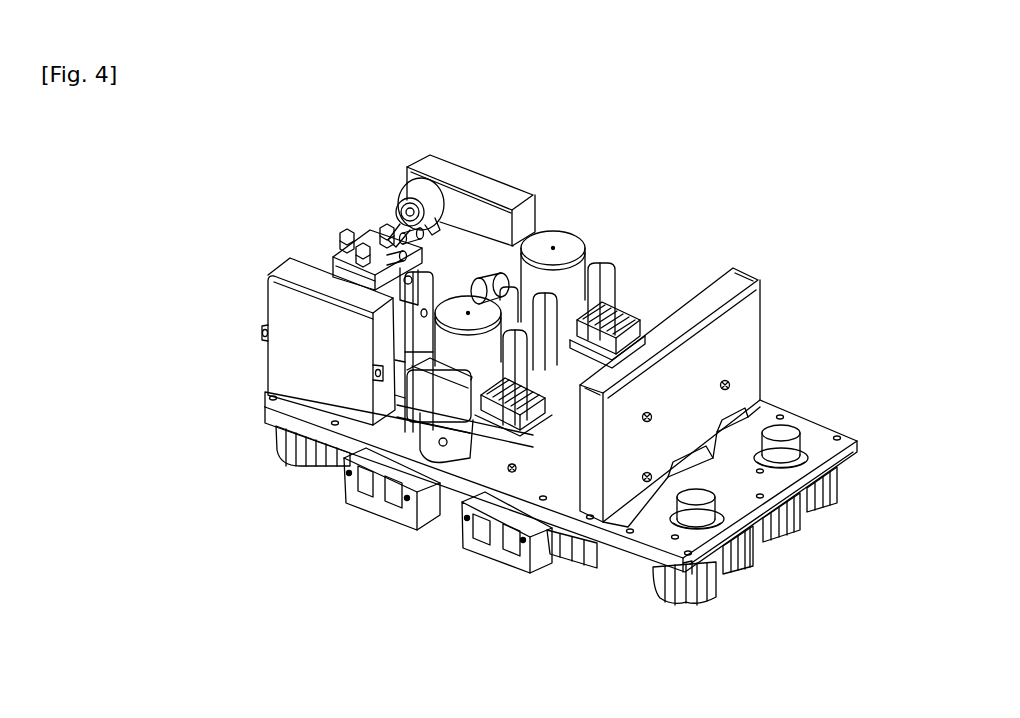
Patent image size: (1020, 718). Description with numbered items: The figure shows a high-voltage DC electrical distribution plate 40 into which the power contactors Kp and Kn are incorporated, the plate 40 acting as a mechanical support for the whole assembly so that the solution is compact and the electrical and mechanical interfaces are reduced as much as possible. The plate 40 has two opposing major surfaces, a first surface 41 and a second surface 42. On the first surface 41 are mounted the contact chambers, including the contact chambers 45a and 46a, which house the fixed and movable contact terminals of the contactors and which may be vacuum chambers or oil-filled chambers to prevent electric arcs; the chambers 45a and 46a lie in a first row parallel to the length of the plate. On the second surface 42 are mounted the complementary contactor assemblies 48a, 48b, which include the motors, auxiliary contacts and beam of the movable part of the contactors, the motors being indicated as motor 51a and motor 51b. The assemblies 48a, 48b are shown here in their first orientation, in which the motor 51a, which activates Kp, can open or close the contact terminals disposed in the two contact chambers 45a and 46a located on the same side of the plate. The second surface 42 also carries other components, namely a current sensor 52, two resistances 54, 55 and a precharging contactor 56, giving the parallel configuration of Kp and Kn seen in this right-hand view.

The plate 40 is at (773, 200).
The first surface 41 is at (810, 520).
The second surface 42 is at (818, 403).
The contact chamber 45a is at (517, 565).
The contact chamber 46a is at (377, 516).
The complementary contactor assembly 48a is at (440, 398).
The complementary contactor assembly 48b is at (627, 268).
The motor 51a is at (445, 342).
The motor 51b is at (542, 238).
The current sensor 52 is at (757, 357).
The resistance 54 is at (290, 343).
The resistance 55 is at (467, 164).
The precharging contactor 56 is at (330, 227).